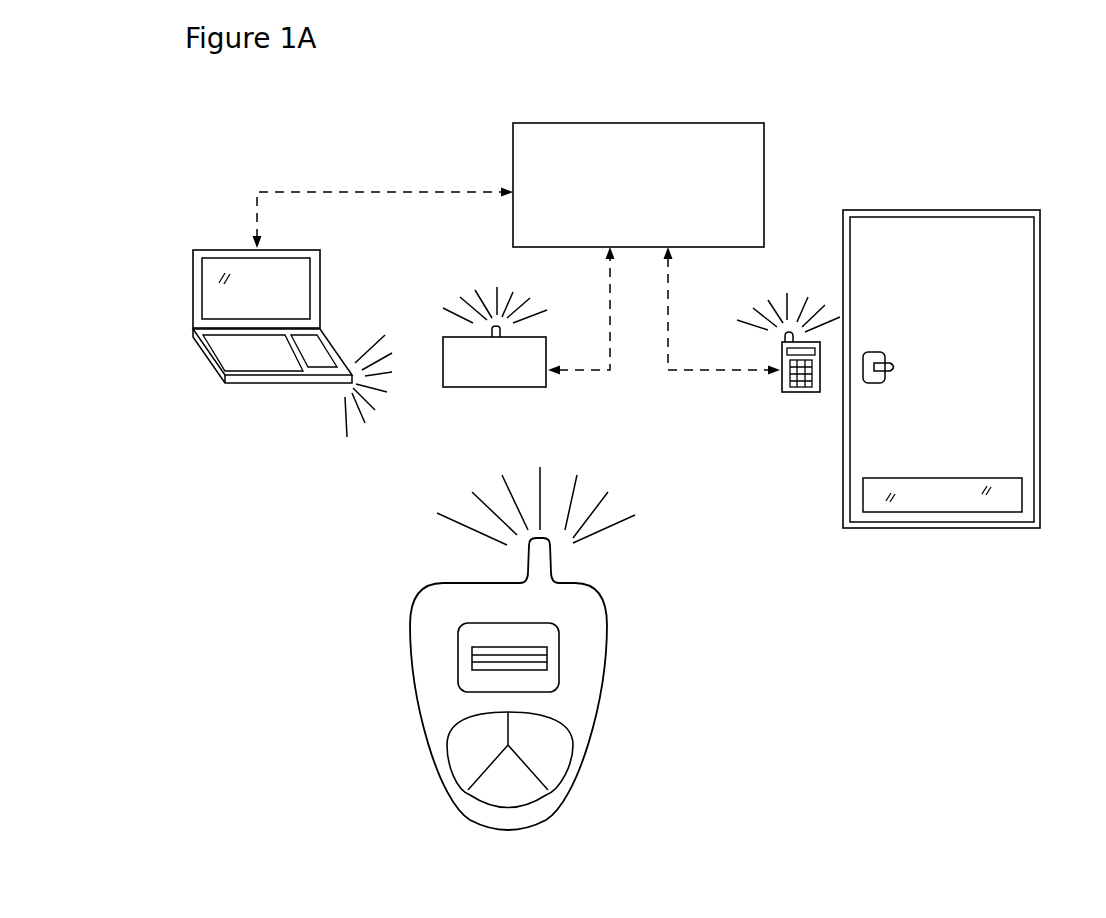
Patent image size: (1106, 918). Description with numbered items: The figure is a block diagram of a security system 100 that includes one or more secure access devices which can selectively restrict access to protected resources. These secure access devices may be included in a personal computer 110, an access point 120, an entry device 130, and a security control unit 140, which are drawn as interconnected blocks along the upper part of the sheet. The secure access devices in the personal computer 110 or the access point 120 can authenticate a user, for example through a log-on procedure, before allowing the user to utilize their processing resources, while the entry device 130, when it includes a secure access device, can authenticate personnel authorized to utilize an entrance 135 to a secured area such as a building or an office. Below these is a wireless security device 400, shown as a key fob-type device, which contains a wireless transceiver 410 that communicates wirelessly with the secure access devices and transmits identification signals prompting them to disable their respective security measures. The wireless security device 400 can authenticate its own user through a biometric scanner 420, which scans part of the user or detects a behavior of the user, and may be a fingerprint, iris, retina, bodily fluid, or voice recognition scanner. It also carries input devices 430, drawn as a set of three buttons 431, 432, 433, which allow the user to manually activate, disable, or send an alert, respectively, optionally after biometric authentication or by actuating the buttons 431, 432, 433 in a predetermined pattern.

The security system 100 is at (966, 136).
The personal computer 110 is at (270, 311).
The access point 120 is at (505, 381).
The entry device 130 is at (812, 392).
The entrance 135 is at (992, 295).
The security control unit 140 is at (707, 233).
The wireless security device 400 is at (316, 655).
The wireless transceiver 410 is at (551, 560).
The biometric scanner 420 is at (559, 655).
The input devices 430 is at (602, 762).
The button 431 is at (459, 753).
The button 432 is at (525, 753).
The button 433 is at (510, 781).